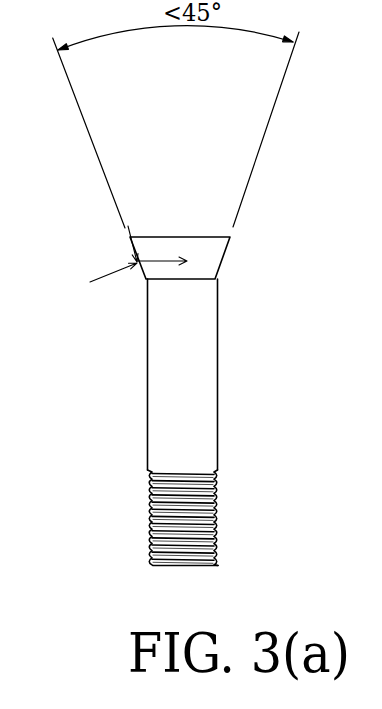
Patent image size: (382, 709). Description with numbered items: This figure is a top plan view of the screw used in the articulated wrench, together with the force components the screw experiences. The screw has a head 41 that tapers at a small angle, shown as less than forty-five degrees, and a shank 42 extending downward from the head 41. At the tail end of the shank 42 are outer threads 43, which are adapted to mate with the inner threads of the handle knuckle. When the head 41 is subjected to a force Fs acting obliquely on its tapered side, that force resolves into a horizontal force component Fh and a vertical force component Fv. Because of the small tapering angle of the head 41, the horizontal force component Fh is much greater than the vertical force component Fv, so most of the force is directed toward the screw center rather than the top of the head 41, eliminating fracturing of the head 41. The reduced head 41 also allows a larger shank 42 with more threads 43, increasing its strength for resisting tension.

The head 41 is at (205, 241).
The shank 42 is at (207, 358).
The outer threads 43 is at (208, 490).
The horizontal force component Fh is at (197, 271).
The force Fs is at (94, 283).
The vertical force component Fv is at (115, 241).